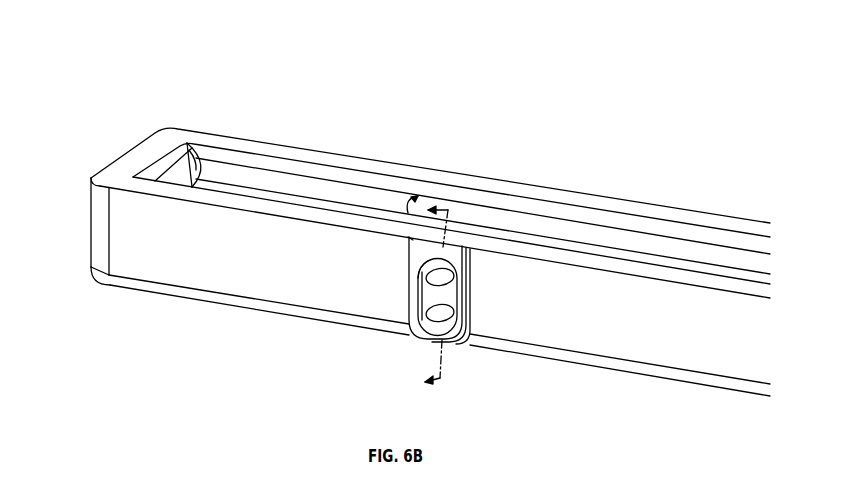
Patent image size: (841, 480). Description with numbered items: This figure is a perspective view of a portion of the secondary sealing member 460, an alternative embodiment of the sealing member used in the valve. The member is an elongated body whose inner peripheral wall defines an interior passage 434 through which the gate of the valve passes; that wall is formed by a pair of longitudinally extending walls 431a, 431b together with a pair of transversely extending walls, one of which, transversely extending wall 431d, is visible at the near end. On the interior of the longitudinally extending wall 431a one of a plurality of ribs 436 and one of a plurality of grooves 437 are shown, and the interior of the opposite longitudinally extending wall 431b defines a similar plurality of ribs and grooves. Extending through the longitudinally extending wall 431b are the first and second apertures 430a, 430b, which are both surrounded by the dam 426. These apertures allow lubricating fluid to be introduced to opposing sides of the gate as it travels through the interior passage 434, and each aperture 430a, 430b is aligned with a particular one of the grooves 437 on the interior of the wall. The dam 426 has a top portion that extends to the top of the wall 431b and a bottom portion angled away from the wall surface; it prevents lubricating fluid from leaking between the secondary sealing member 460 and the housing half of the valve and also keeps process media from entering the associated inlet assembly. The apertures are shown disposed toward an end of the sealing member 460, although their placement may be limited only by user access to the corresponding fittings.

The secondary sealing member 460 is at (112, 66).
The longitudinally extending wall 431a is at (525, 182).
The longitudinally extending wall 431b is at (148, 267).
The transversely extending wall 431d is at (130, 158).
The interior passage 434 is at (253, 191).
The rib 436 is at (349, 193).
The groove 437 is at (673, 262).
The dam 426 is at (408, 295).
The first aperture 430a is at (440, 277).
The second aperture 430b is at (440, 313).